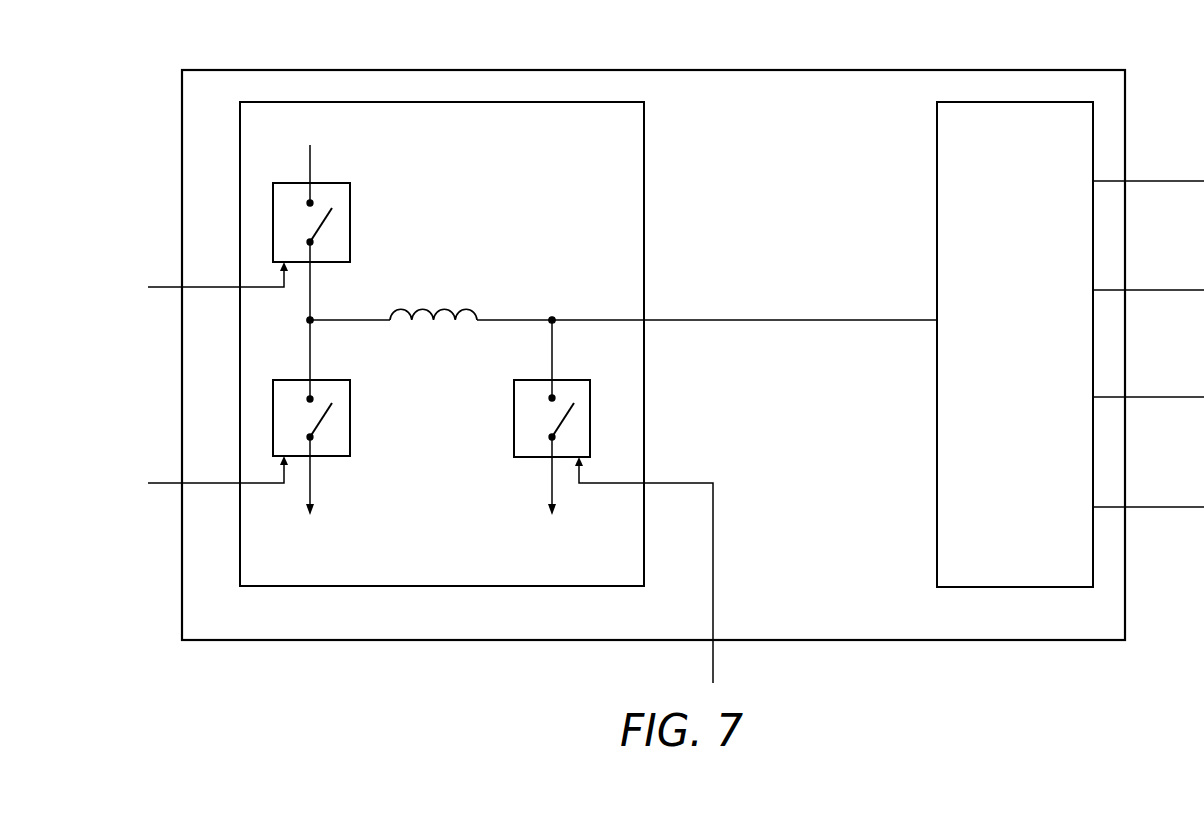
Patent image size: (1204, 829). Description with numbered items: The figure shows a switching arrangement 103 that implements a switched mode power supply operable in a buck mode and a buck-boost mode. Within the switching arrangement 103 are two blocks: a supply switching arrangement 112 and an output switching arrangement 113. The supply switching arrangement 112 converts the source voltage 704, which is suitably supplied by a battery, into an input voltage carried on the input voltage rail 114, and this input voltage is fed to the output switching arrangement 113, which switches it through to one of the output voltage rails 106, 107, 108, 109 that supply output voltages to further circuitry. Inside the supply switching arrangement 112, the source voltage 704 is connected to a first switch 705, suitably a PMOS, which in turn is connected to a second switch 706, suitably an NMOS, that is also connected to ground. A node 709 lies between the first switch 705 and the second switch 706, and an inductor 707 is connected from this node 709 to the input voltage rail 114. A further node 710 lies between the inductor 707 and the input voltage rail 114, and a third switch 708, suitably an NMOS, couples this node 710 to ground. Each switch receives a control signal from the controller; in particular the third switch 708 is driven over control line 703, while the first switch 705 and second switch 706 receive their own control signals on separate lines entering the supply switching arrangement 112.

The switching arrangement 103 is at (1097, 642).
The supply switching arrangement 112 is at (644, 117).
The output switching arrangement 113 is at (937, 119).
The source voltage 704 is at (274, 125).
The first switch 705 is at (273, 200).
The second switch 706 is at (273, 397).
The inductor 707 is at (443, 308).
The third switch 708 is at (514, 395).
The node 709 is at (307, 320).
The node 710 is at (551, 317).
The control line 703 is at (714, 495).
The input voltage rail 114 is at (790, 321).
The output voltage rail 106 is at (1177, 180).
The output voltage rail 107 is at (1177, 289).
The output voltage rail 108 is at (1177, 396).
The output voltage rail 109 is at (1177, 506).